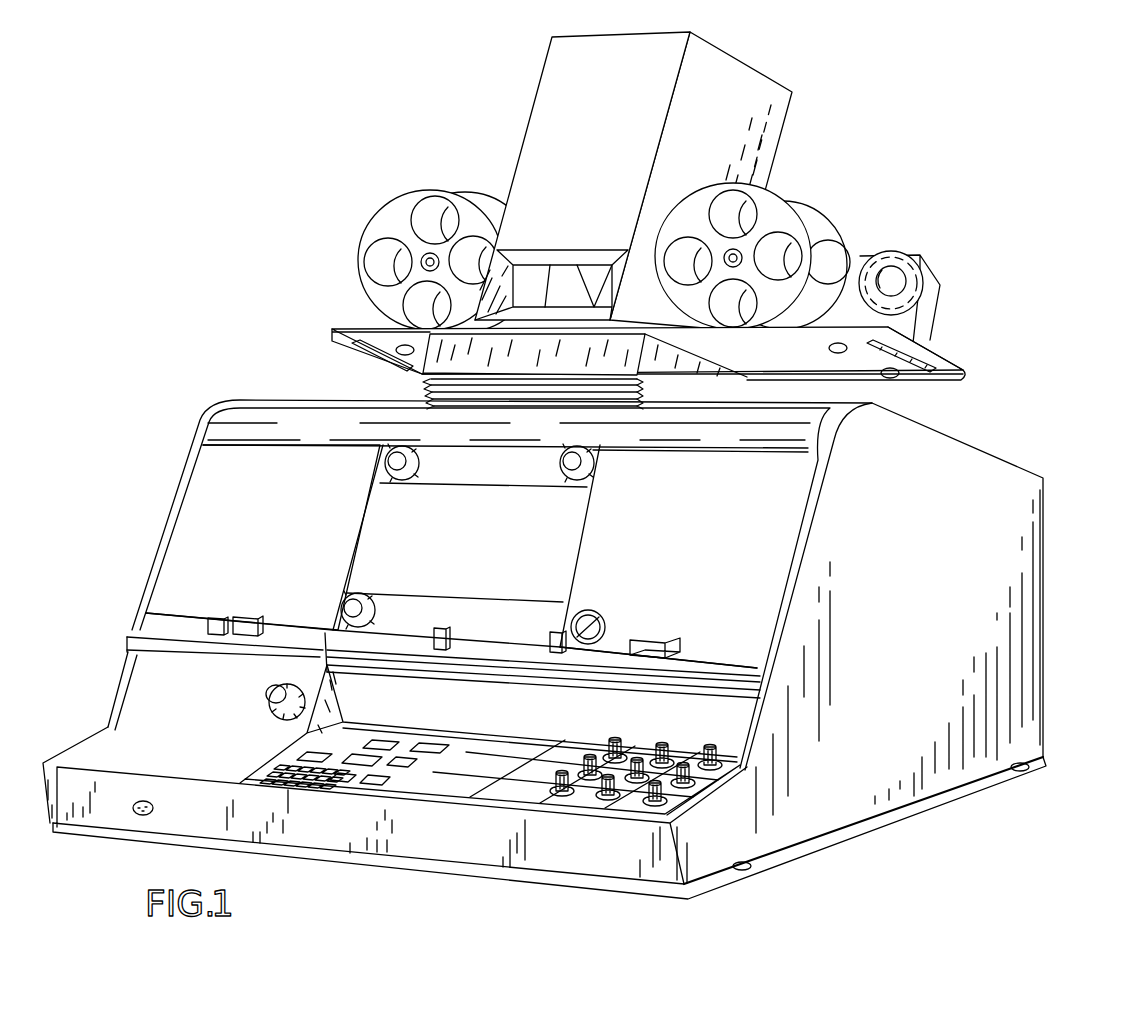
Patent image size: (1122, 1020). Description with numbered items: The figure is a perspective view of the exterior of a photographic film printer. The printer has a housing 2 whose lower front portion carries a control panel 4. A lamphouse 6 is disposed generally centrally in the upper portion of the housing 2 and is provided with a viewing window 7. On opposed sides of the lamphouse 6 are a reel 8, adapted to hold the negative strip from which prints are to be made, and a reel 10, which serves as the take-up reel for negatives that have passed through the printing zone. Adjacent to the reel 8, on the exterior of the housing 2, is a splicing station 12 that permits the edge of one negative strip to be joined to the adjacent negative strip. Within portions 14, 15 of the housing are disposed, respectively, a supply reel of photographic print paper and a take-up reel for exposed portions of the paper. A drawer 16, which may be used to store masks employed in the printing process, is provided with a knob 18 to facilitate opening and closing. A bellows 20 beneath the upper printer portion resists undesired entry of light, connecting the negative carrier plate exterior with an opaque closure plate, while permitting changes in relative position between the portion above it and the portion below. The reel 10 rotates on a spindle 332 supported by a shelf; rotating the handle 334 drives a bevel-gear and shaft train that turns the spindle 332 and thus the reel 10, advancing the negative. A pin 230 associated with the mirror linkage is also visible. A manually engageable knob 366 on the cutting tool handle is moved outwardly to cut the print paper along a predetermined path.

The housing 2 is at (886, 819).
The control panel 4 is at (708, 779).
The lamphouse 6 is at (752, 129).
The viewing window 7 is at (538, 283).
The reel 8 is at (772, 197).
The reel 10 is at (435, 190).
The splicing station 12 is at (936, 274).
The housing portion 14 is at (692, 560).
The housing portion 15 is at (278, 550).
The drawer 16 is at (210, 814).
The knob 18 is at (147, 801).
The bellows structure 20 is at (422, 390).
The pin 230 is at (332, 332).
The spindle 332 is at (423, 258).
The handle 334 is at (273, 688).
The knob 366 is at (567, 635).